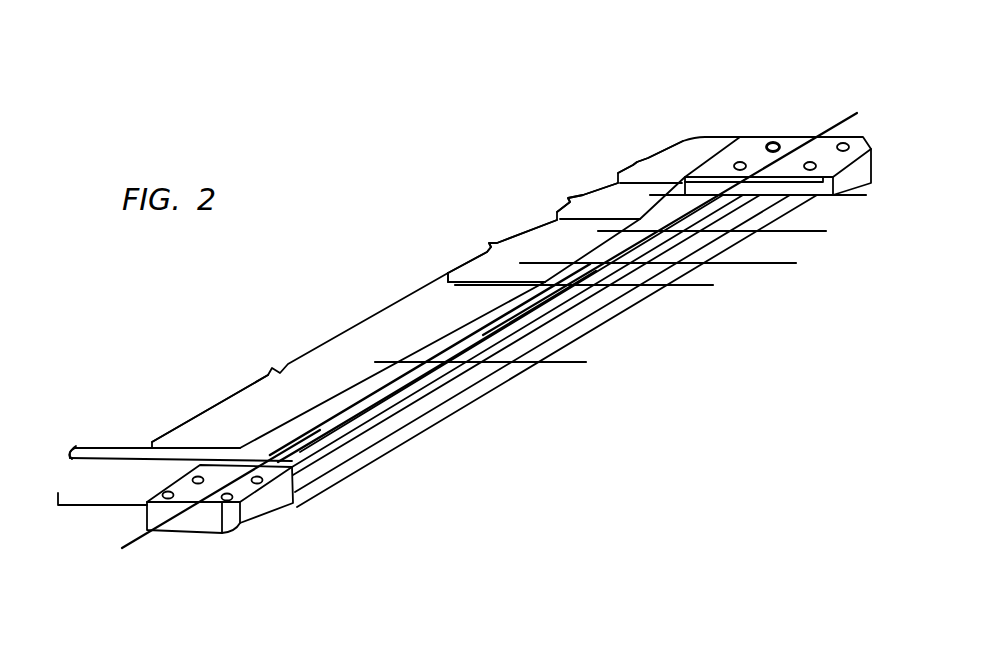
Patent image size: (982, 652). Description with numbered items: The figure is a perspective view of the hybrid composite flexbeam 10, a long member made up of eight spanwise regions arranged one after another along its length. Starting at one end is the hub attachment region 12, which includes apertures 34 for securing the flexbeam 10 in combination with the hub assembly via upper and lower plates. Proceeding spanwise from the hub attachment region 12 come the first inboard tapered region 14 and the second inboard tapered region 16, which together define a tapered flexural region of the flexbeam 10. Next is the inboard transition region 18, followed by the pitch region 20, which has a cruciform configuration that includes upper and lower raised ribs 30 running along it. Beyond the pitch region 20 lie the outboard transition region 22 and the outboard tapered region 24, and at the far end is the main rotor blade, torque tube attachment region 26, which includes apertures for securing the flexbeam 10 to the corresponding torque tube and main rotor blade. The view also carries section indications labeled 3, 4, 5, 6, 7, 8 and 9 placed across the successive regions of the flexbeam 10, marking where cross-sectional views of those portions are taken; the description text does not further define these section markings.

The hybrid composite flexbeam 10 is at (686, 384).
The hub attachment region 12 is at (646, 157).
The first inboard tapered region 14 is at (580, 196).
The second inboard tapered region 16 is at (502, 246).
The inboard transition region 18 is at (447, 283).
The pitch region 20 is at (211, 396).
The outboard transition region 22 is at (74, 446).
The outboard tapered region 24 is at (70, 458).
The torque tube attachment region 26 is at (66, 480).
The raised ribs 30 is at (350, 420).
The apertures 34 is at (767, 143).
The section line 3- 3 is at (460, 385).
The section line 4- 4 is at (583, 310).
The section line 5- 5 is at (645, 280).
The section line 6- 6 is at (692, 250).
The section line 7- 7 is at (634, 217).
The section line 8- 8 is at (741, 212).
The section line 9- 9 is at (181, 487).